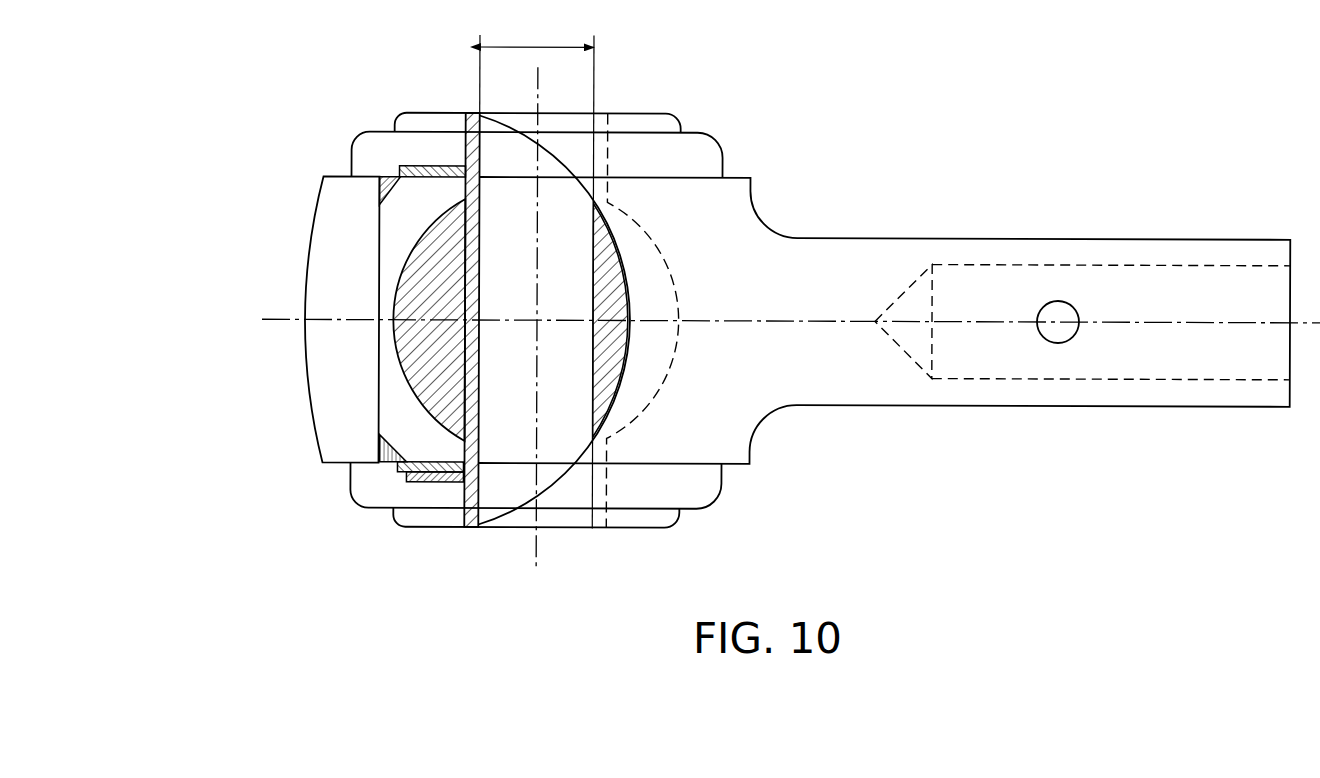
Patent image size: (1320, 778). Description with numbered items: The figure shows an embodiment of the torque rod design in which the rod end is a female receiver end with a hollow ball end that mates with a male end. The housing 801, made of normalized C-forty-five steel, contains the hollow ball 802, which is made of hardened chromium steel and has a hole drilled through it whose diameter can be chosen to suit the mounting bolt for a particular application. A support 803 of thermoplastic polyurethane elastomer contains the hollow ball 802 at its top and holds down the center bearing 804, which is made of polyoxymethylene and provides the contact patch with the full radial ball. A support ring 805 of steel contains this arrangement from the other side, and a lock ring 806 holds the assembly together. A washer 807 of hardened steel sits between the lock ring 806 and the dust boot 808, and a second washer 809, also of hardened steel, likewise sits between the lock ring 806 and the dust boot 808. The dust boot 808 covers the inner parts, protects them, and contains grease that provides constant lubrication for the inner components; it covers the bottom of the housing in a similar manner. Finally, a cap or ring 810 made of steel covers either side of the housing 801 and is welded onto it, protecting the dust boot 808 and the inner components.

The housing 801 is at (283, 282).
The hollow ball 802 is at (461, 536).
The support 803 is at (377, 200).
The center bearing 804 is at (374, 348).
The support ring 805 is at (373, 443).
The lock ring 806 is at (391, 476).
The washer 807 is at (434, 494).
The dust boot 808 is at (402, 99).
The washer 809 is at (387, 151).
The cap/ring 810 is at (724, 492).